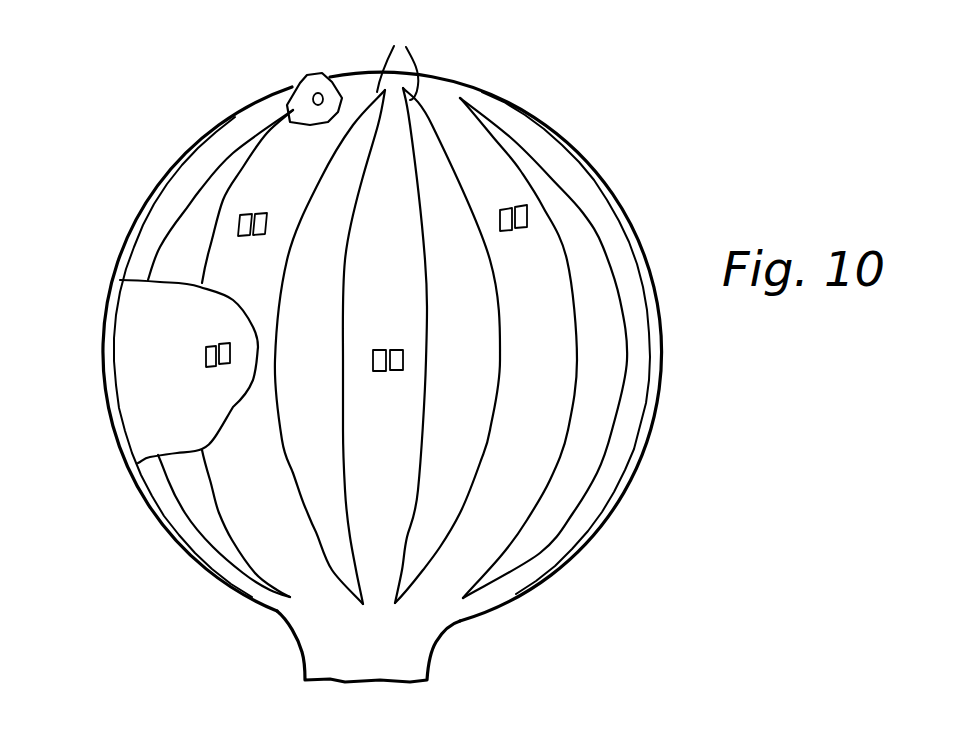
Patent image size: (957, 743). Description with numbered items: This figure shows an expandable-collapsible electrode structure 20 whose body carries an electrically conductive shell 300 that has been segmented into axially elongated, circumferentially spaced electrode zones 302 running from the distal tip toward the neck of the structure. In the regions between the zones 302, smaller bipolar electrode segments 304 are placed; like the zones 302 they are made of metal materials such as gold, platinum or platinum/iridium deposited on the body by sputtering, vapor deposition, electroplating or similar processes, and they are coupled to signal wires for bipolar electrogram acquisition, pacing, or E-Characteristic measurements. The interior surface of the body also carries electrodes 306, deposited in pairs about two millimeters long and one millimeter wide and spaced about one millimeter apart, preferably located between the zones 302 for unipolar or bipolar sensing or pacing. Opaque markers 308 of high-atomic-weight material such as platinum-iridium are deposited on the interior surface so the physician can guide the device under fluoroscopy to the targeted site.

The balloon 20 is at (622, 136).
The electrically conductive shell 300 is at (590, 251).
The electrode zones 302 is at (153, 537).
The bipolar electrode segments 304 is at (248, 200).
The electrodes 306 is at (190, 354).
The opaque markers 308 is at (319, 93).